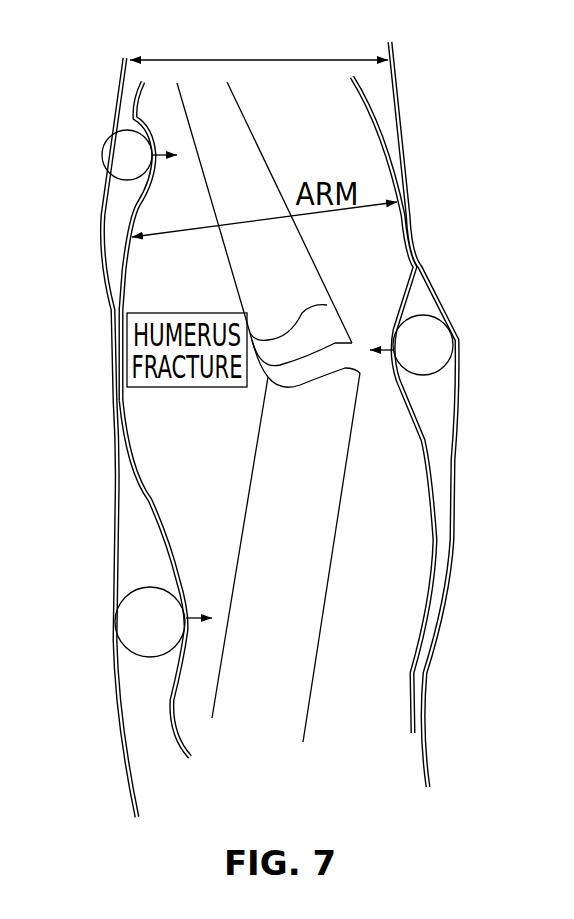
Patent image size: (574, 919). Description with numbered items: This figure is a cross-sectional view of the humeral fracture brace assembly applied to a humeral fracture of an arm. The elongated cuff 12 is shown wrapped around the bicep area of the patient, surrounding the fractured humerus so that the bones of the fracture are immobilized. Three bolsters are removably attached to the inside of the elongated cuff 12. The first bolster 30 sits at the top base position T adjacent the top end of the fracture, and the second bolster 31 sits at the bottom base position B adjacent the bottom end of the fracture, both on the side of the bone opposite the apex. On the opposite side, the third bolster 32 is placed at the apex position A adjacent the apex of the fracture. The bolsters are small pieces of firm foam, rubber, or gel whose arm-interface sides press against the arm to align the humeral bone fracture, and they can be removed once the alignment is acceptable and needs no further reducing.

The elongated cuff 12 is at (258, 58).
The first bolster 30 is at (123, 163).
The second bolster 31 is at (137, 620).
The third bolster 32 is at (437, 342).
The top base position T is at (125, 118).
The apex position A is at (373, 378).
The bottom base position B is at (147, 563).